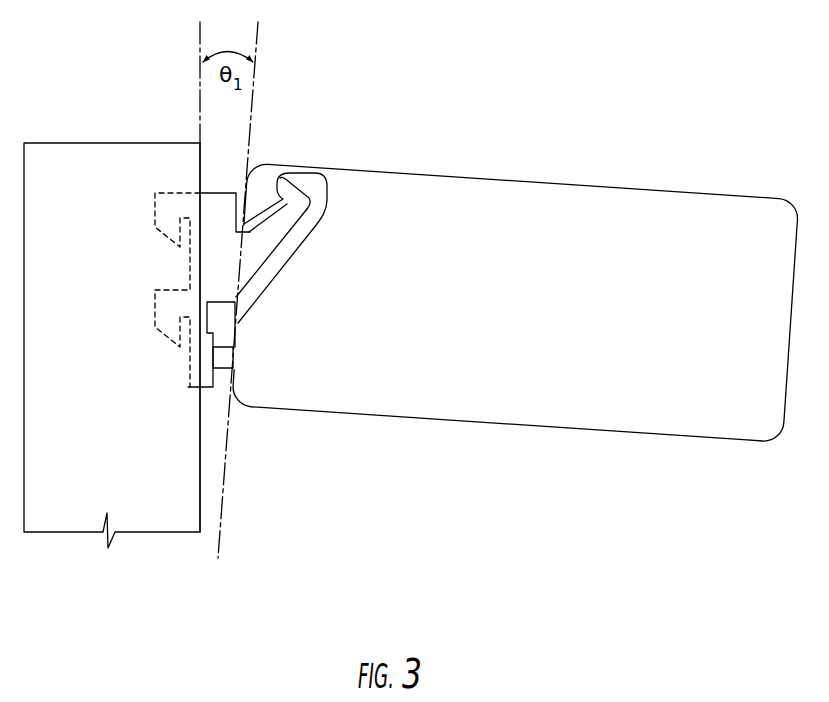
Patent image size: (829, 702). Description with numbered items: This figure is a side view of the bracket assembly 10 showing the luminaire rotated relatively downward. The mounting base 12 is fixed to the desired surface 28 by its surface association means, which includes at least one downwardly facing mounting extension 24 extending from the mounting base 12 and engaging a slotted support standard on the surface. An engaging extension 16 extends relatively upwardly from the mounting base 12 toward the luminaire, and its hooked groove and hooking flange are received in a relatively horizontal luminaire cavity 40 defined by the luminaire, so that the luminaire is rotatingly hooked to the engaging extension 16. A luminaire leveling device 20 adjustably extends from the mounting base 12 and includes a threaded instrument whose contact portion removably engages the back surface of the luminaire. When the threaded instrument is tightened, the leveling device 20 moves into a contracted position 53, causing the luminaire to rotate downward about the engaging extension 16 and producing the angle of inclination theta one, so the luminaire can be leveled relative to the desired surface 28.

The bracket assembly 10 is at (515, 276).
The mounting base 12 is at (220, 274).
The engaging extension 16 is at (293, 215).
The luminaire leveling device 20 is at (227, 369).
The downwardly facing mounting extension 24 is at (160, 224).
The desired surface 28 is at (202, 477).
The luminaire cavity 40 is at (306, 248).
The contracted position 53 is at (223, 346).